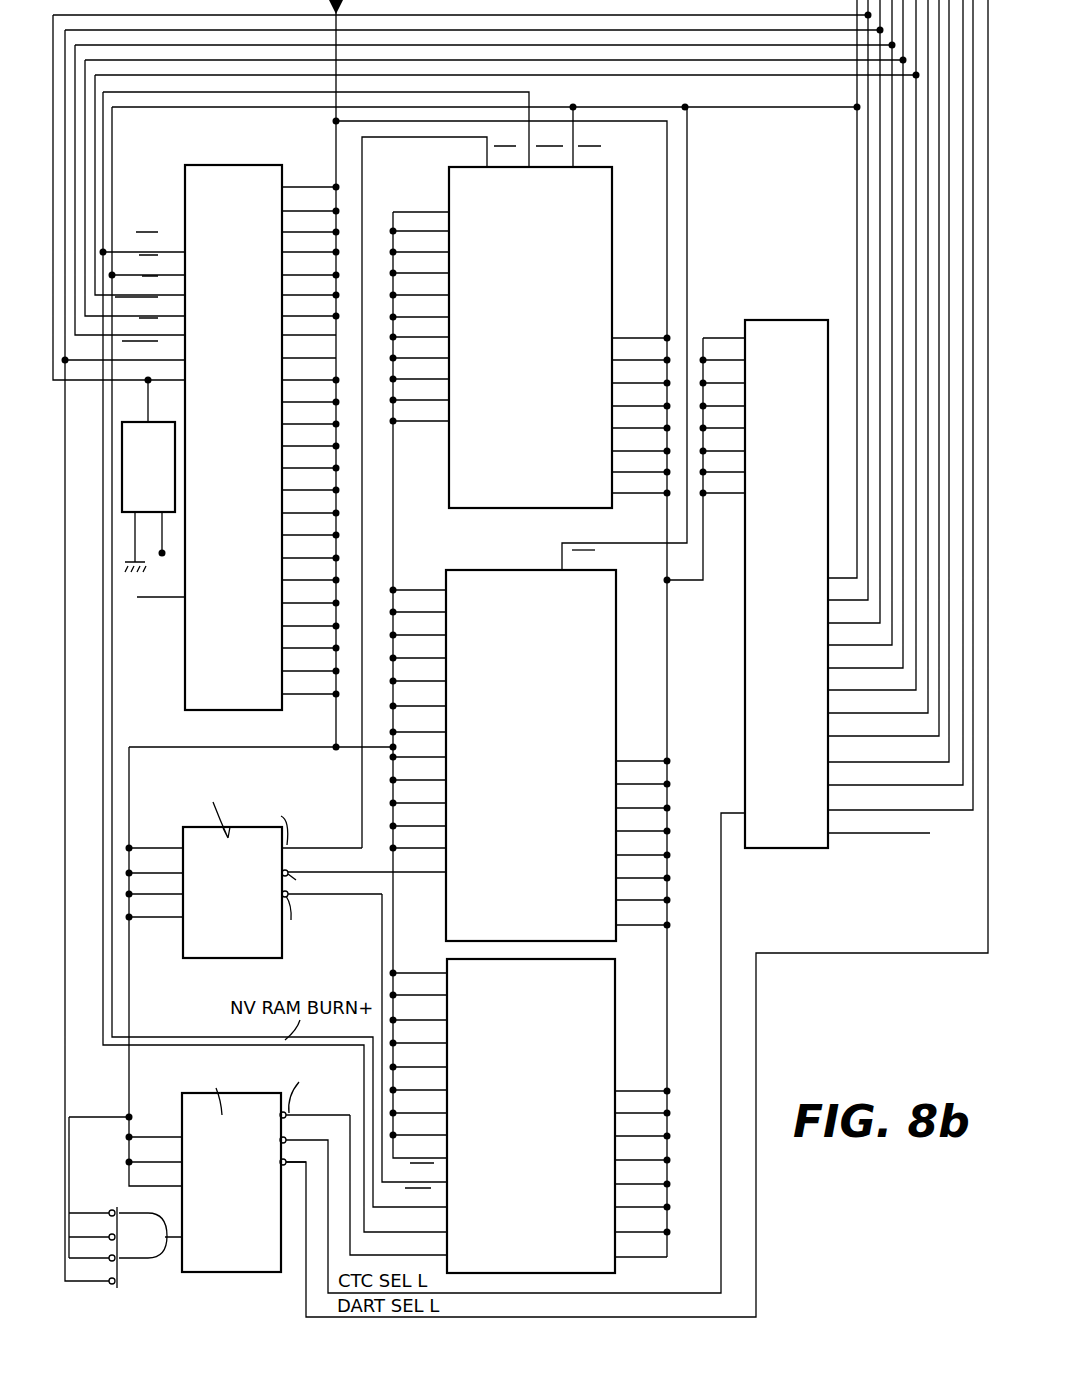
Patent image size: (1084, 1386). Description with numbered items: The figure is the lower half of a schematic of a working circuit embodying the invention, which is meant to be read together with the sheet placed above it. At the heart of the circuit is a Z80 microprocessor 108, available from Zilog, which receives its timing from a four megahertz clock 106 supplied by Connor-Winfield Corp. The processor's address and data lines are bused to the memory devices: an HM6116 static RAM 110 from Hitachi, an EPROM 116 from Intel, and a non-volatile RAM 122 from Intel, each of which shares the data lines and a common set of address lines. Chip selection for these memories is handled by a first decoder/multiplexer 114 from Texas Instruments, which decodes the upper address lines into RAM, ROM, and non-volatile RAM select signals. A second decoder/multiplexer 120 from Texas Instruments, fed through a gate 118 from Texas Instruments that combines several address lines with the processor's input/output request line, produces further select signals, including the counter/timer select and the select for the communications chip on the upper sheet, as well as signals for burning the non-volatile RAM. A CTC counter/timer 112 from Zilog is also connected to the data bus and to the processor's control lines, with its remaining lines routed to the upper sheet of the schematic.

The 4.0 MHz clock 106 is at (133, 422).
The Z80 108 is at (222, 163).
The HM6116 110 is at (487, 493).
The CTC 112 is at (795, 330).
The 74LS138 114 is at (217, 950).
The 2732 116 is at (509, 569).
The 7425 118 is at (142, 1214).
The 74LS138 120 is at (233, 1258).
The 2004 122 is at (611, 993).